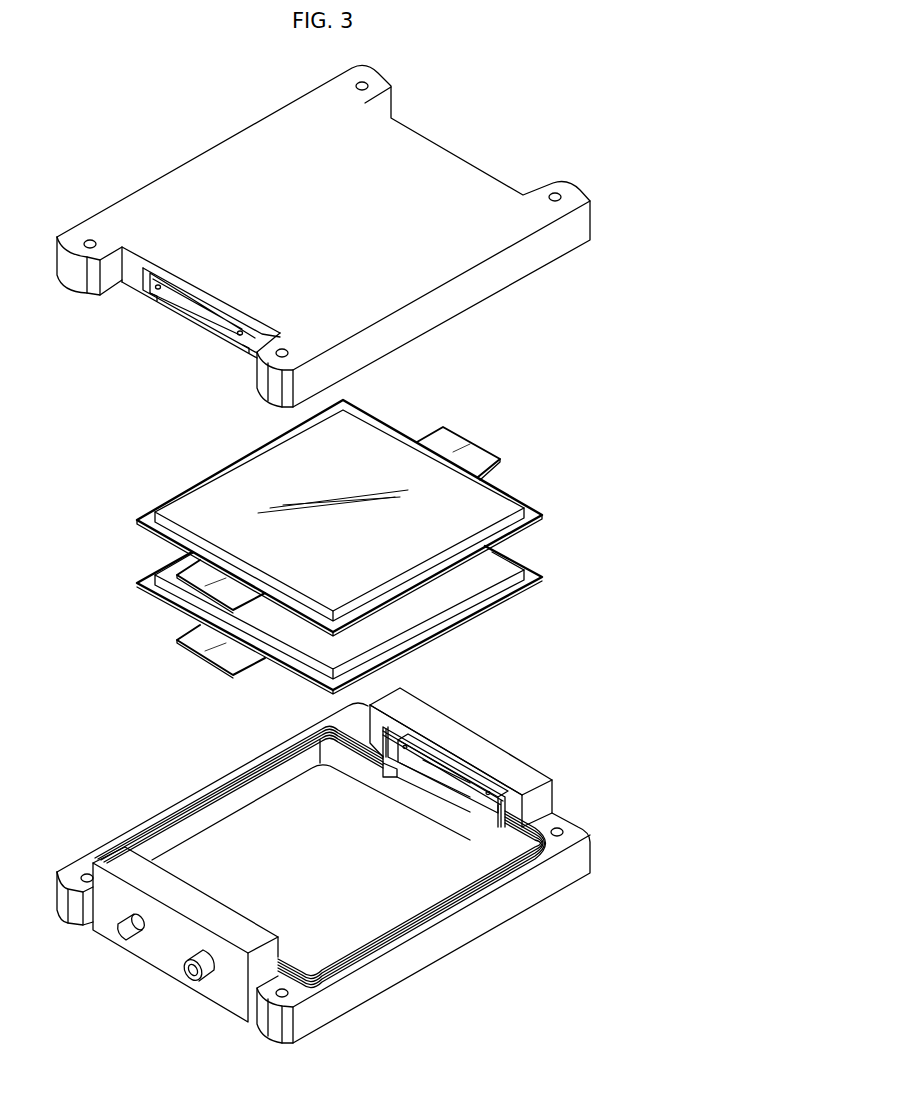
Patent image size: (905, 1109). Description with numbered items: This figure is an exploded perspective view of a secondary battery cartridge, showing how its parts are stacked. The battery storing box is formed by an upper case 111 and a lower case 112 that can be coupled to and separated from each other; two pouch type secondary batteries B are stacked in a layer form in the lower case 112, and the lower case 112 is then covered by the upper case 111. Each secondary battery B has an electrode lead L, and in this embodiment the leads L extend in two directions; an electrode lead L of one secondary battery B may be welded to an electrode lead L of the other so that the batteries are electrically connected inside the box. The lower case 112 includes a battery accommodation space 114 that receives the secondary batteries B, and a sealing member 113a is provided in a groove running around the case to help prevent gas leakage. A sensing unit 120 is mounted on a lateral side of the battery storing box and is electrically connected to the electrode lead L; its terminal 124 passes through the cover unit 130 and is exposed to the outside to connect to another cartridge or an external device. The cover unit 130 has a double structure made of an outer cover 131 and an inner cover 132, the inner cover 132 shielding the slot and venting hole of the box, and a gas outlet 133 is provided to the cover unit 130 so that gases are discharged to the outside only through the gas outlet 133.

The upper case 111 is at (248, 148).
The lower case 112 is at (321, 857).
The sealing member 113a is at (195, 790).
The battery accommodation space 114 is at (297, 837).
The sensing unit 120 is at (455, 780).
The terminal 124 is at (118, 930).
The cover unit 130 is at (165, 947).
The outer cover 131 is at (462, 747).
The inner cover 132 is at (508, 805).
The gas outlet 133 is at (207, 975).
The secondary battery B is at (228, 487).
The electrode lead L is at (480, 452).